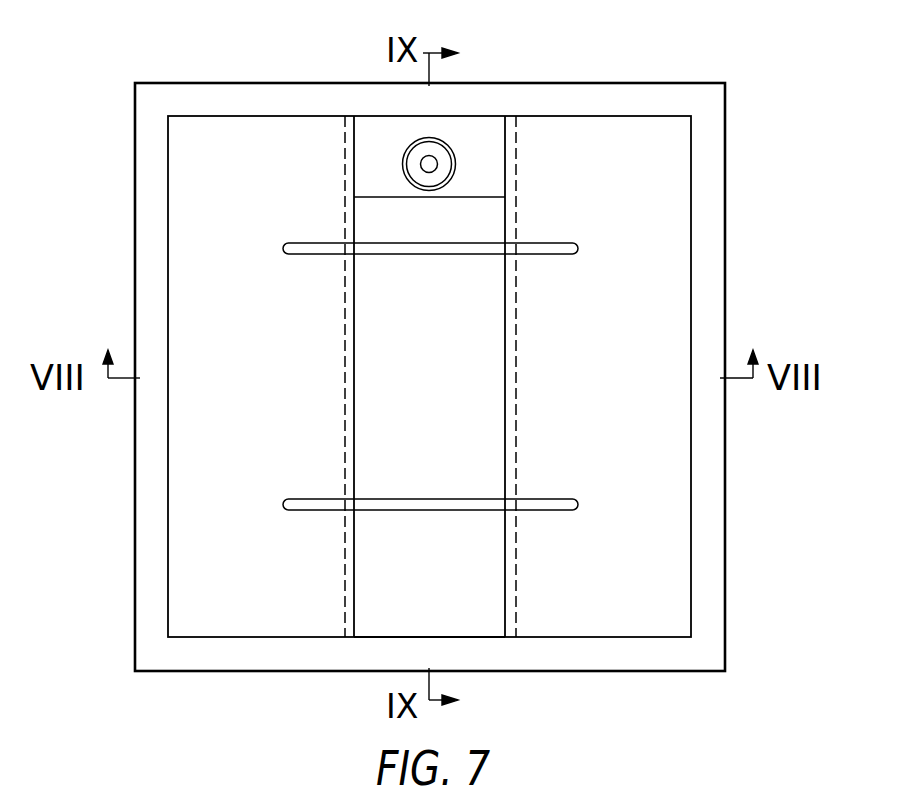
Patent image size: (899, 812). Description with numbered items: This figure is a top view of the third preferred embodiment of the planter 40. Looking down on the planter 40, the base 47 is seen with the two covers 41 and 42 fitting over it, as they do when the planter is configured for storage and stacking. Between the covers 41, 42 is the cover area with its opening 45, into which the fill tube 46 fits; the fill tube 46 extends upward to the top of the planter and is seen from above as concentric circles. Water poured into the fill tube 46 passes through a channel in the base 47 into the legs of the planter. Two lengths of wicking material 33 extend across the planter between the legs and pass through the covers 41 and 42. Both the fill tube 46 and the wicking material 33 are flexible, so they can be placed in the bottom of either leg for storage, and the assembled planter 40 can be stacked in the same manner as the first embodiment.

The planter 40 is at (163, 58).
The cover 41 is at (332, 361).
The cover 42 is at (528, 361).
The opening 45 is at (367, 166).
The fill tube 46 is at (450, 154).
The wicking material 33 is at (407, 255).
The base 47 is at (373, 572).